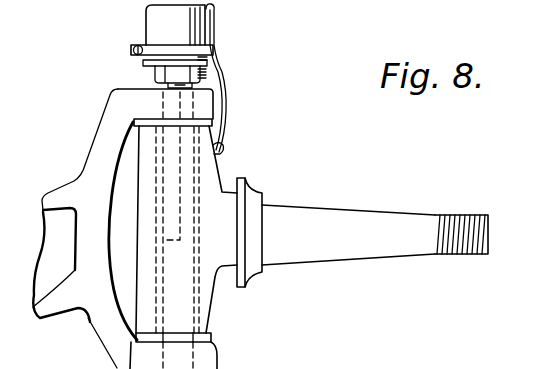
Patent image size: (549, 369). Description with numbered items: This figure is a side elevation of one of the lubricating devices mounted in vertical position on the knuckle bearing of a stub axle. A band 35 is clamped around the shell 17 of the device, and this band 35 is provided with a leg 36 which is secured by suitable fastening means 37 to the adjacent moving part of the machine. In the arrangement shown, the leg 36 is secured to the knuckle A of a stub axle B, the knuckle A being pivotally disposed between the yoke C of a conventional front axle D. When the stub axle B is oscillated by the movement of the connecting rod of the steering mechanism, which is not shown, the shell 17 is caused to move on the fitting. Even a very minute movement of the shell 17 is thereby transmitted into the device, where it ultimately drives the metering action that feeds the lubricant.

The shell 17 is at (203, 34).
The band 35 is at (213, 50).
The leg 36 is at (227, 93).
The fastening means 37 is at (224, 151).
The knuckle A is at (208, 178).
The stub axle B is at (298, 210).
The yoke C is at (118, 108).
The front axle D is at (50, 195).